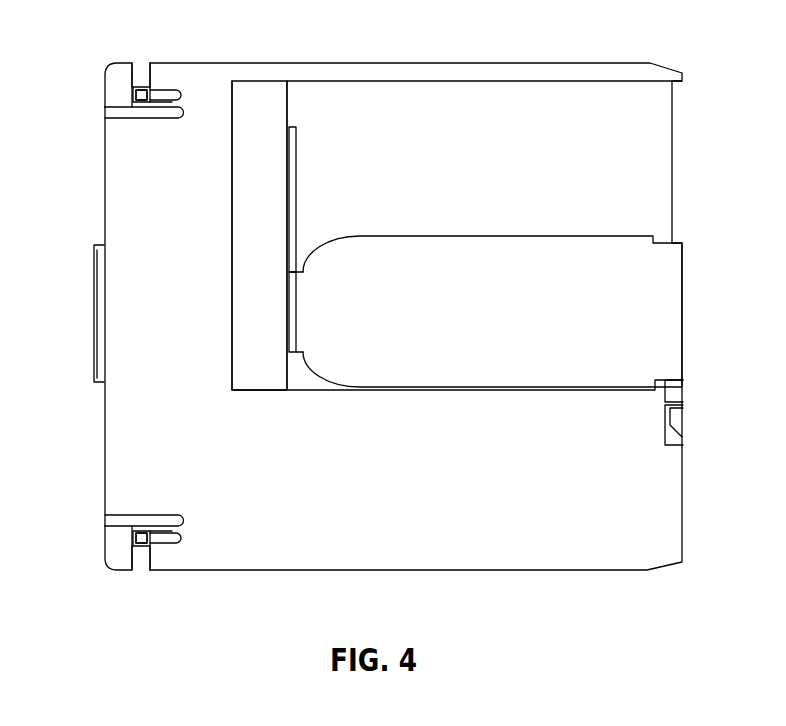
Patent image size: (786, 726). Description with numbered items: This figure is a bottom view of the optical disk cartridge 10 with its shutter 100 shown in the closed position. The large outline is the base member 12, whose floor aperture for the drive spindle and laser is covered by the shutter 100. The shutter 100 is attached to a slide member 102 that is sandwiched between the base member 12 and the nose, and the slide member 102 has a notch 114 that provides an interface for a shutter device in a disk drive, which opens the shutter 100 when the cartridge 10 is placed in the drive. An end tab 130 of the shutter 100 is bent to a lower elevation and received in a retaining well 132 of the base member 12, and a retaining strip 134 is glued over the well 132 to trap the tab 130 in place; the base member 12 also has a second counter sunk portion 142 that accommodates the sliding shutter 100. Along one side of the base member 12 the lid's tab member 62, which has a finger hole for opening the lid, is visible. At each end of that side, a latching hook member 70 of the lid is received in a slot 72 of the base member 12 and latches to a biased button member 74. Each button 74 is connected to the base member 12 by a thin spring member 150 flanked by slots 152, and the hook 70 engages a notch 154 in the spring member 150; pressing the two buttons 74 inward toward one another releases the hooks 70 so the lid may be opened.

The optical disk cartridge 10 is at (523, 612).
The base member 12 is at (394, 497).
The tab member 62 is at (94, 302).
The latching hook member 70 is at (147, 90).
The slot 72 is at (140, 74).
The button member 74 is at (106, 74).
The shutter 100 is at (466, 325).
The slide member 102 is at (675, 393).
The notch 114 is at (672, 424).
The end tab 130 is at (292, 313).
The retaining well 132 is at (293, 210).
The retaining strip 134 is at (253, 249).
The second counter sunk portion 142 is at (481, 163).
The spring member 150 is at (172, 105).
The slots 152 is at (182, 94).
The notch 154 is at (141, 104).